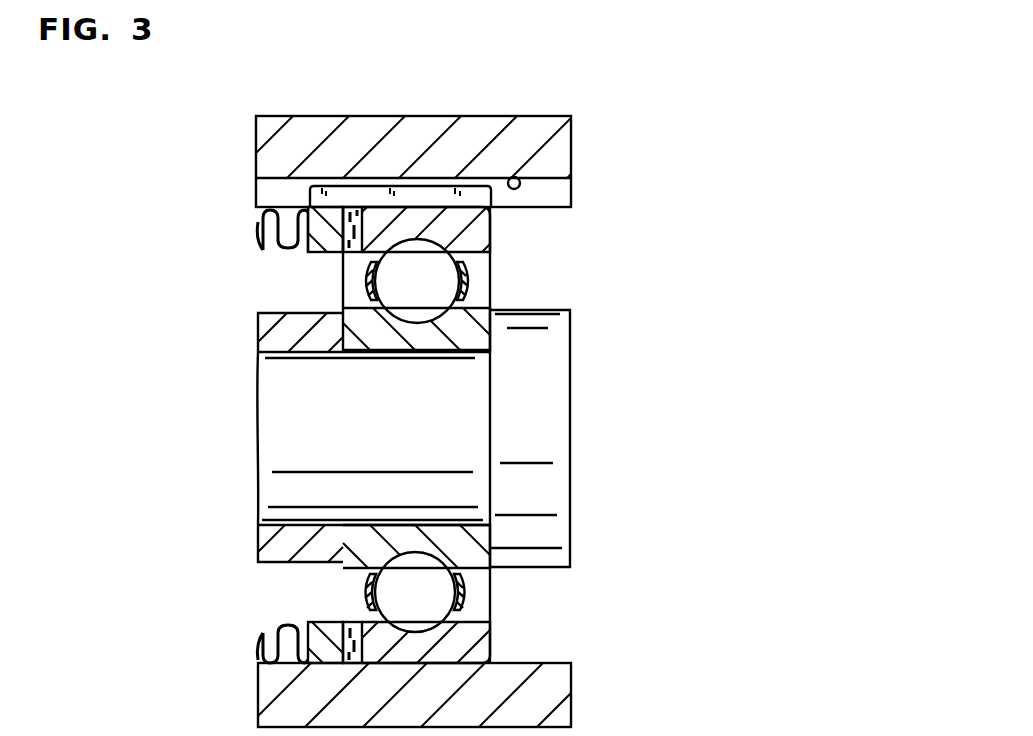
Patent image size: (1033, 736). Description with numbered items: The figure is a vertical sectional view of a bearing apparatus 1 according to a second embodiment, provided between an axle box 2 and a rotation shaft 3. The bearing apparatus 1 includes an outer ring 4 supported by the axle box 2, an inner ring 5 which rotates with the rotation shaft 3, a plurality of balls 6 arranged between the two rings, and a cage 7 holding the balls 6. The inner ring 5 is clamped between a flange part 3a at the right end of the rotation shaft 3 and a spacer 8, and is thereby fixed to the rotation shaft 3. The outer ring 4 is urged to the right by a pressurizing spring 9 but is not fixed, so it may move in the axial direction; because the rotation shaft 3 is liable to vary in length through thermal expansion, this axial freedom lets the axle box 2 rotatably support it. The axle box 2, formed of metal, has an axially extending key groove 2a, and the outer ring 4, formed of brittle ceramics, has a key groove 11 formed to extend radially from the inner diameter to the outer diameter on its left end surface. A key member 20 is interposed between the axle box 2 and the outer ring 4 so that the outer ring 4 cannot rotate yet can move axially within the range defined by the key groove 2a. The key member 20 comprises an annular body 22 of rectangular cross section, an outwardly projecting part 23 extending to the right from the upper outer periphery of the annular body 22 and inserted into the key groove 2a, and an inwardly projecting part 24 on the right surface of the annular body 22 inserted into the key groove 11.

The bearing apparatus 1 is at (512, 256).
The axle box 2 is at (571, 147).
The key groove 2a is at (514, 176).
The rotation shaft 3 is at (570, 450).
The flange part 3a is at (557, 345).
The outer ring 4 is at (490, 228).
The inner ring 5 is at (470, 333).
The balls 6 is at (445, 273).
The cage 7 is at (462, 283).
The spacer 8 is at (257, 338).
The pressurizing spring 9 is at (262, 215).
The key groove 11 is at (352, 235).
The key member 20 is at (308, 250).
The annular body 22 is at (336, 232).
The outwardly projecting part 23 is at (423, 197).
The inwardly projecting part 24 is at (348, 260).